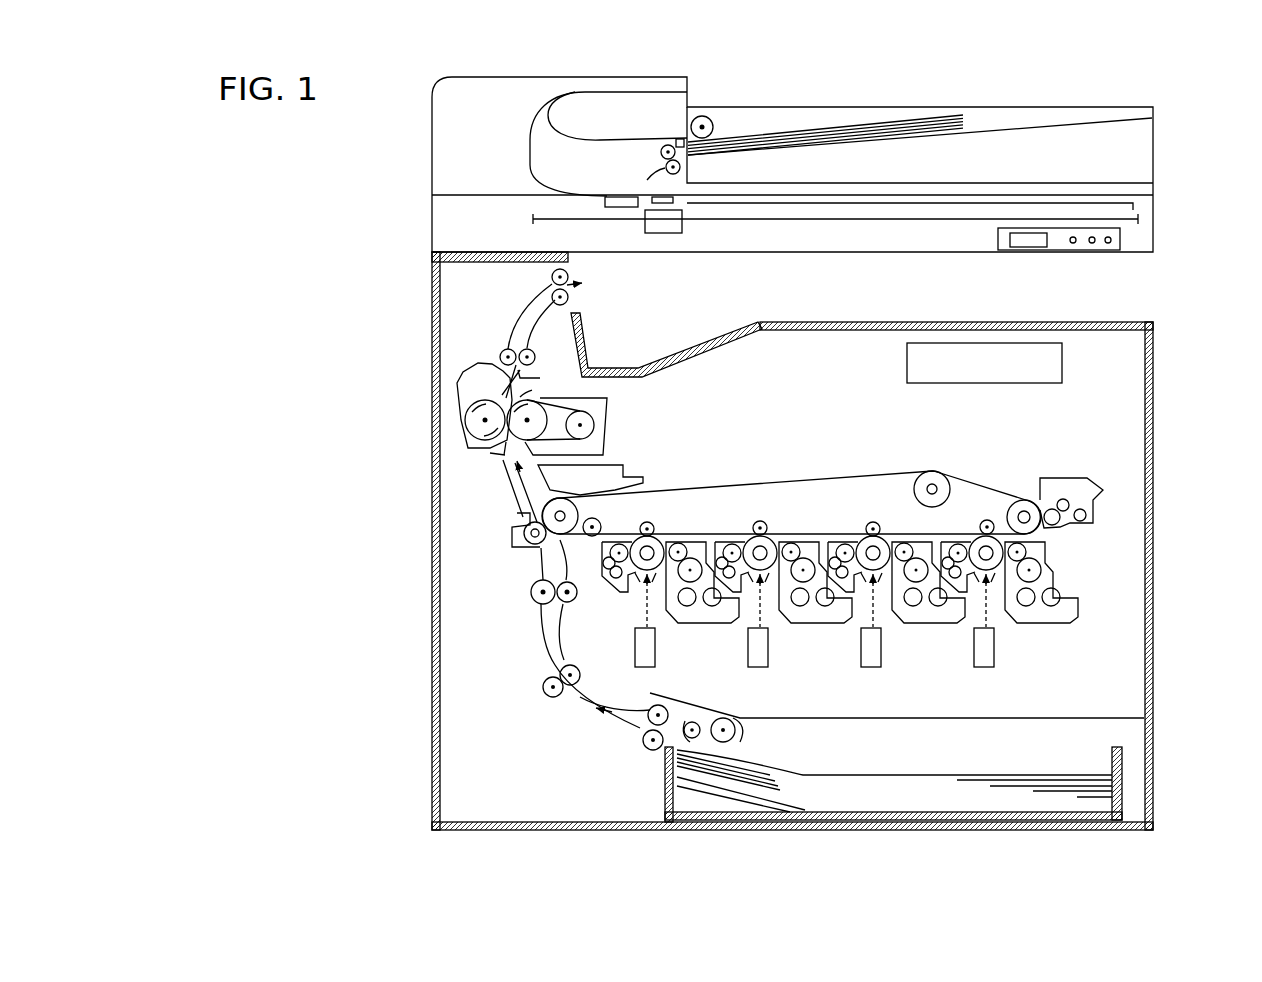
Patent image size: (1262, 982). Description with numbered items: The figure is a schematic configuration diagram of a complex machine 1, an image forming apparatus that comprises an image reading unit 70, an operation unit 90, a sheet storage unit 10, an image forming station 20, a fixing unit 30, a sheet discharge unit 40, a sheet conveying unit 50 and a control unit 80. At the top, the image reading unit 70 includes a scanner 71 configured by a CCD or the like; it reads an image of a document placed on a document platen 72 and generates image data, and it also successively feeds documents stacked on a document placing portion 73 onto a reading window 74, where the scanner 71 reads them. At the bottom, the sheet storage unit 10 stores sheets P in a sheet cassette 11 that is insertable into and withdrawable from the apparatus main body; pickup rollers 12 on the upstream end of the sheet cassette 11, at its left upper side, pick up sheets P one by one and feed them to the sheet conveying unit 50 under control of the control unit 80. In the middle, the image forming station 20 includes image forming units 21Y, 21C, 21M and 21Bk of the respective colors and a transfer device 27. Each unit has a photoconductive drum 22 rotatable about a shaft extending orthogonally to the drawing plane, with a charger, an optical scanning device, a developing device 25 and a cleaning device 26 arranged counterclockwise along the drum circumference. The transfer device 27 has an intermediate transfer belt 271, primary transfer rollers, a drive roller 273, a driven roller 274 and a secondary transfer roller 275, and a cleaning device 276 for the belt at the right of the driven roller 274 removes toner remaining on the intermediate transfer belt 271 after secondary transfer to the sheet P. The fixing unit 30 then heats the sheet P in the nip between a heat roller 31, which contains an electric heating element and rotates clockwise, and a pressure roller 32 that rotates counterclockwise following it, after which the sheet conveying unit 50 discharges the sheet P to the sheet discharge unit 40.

The complex machine 1 is at (1178, 292).
The sheet storage unit 10 is at (924, 782).
The sheet cassette 11 is at (782, 813).
The pickup rollers 12 is at (722, 743).
The sheet P is at (857, 788).
The image forming station 20 is at (903, 533).
The image forming unit 21Bk is at (670, 551).
The image forming unit 21M is at (783, 537).
The image forming unit 21C is at (896, 537).
The image forming unit 21Y is at (1003, 556).
The photoconductive drum 22 is at (995, 533).
The developing device 25 is at (1060, 572).
The cleaning device 26 is at (945, 533).
The transfer device 27 is at (791, 472).
The intermediate transfer belt 271 is at (768, 488).
The drive roller 273 is at (590, 487).
The driven roller 274 is at (1024, 510).
The secondary transfer roller 275 is at (510, 535).
The cleaning device for the intermediate transfer belt 276 is at (1067, 478).
The fixing unit 30 is at (492, 369).
The heat roller 31 is at (500, 456).
The pressure roller 32 is at (478, 424).
The sheet discharge unit 40 is at (687, 332).
The sheet conveying unit 50 is at (538, 654).
The image reading unit 70 is at (839, 181).
The scanner 71 is at (682, 230).
The document platen 72 is at (860, 200).
The document placing portion 73 is at (1010, 125).
The reading window 74 is at (617, 205).
The control unit 80 is at (1062, 358).
The operation unit 90 is at (1100, 236).